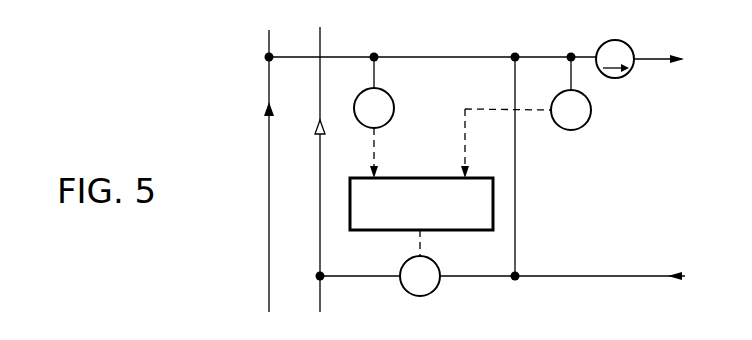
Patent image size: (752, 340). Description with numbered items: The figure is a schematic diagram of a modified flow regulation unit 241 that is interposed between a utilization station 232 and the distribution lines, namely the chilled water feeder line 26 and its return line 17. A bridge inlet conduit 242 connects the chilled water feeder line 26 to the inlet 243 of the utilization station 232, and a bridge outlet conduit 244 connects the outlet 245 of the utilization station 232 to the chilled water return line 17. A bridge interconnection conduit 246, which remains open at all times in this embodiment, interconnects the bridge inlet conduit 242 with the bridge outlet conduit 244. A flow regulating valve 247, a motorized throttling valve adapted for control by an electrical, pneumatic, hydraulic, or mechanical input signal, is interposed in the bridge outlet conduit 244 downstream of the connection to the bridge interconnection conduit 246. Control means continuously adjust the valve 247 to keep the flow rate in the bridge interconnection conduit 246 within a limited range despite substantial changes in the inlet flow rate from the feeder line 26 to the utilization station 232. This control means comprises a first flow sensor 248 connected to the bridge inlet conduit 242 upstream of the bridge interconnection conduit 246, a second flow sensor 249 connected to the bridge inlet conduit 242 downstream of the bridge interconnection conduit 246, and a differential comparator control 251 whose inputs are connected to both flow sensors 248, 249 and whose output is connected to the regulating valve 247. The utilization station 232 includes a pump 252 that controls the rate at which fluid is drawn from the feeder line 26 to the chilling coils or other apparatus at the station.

The chilled water feeder line 26 is at (268, 144).
The return line 17 is at (319, 190).
The bridge inlet conduit 242 is at (345, 55).
The flow regulation unit 241 is at (448, 48).
The inlet 243 is at (574, 55).
The pump 252 is at (630, 46).
The first flow sensor 248 is at (393, 98).
The second flow sensor 249 is at (571, 130).
The differential comparator control 251 is at (416, 177).
The utilization station 232 is at (672, 177).
The bridge interconnection conduit 246 is at (516, 208).
The flow regulating valve 247 is at (402, 284).
The bridge outlet conduit 244 is at (479, 278).
The outlet 245 is at (593, 278).